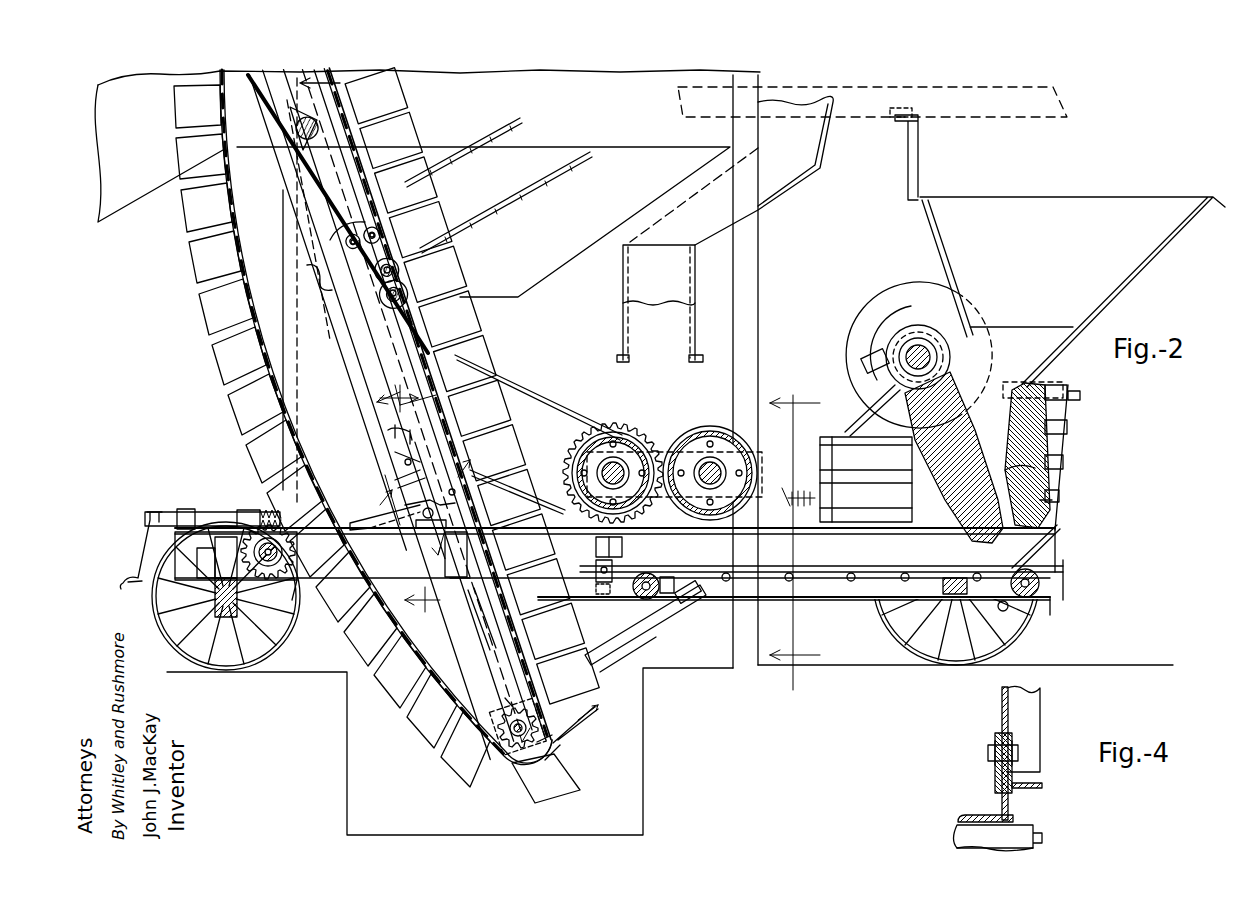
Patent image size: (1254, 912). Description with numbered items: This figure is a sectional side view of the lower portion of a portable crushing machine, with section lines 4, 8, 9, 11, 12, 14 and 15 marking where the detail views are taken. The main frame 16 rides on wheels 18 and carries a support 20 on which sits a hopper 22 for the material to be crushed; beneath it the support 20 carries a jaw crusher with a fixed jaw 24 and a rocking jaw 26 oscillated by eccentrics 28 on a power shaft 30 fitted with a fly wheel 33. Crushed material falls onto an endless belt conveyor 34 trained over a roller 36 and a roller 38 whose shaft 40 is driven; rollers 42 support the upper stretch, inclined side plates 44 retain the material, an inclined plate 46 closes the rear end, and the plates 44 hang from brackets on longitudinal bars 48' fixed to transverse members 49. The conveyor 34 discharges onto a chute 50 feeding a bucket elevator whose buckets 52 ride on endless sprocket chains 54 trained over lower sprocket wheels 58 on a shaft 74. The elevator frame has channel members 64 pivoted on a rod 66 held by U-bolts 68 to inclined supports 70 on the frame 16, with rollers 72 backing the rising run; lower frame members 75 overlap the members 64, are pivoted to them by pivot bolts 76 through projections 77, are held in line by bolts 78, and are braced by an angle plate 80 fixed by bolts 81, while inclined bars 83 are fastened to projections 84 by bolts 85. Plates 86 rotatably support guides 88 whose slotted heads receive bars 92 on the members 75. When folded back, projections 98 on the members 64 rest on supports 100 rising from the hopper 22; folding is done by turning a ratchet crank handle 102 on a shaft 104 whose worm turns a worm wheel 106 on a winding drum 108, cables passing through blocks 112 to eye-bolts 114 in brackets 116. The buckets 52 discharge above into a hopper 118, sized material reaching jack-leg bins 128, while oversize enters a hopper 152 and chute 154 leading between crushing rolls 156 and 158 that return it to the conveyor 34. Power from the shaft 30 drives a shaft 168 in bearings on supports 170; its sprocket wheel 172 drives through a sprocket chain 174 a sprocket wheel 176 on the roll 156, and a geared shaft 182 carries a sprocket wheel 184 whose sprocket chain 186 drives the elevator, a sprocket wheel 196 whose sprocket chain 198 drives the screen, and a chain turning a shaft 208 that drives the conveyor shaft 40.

In FIG. 2, the section line 4— 4 is at (554, 723).
In FIG. 2, the section line 8— 8 is at (800, 542).
In FIG. 2, the section line 9— 9 is at (428, 599).
In FIG. 2, the section line 11— 11 is at (320, 75).
In FIG. 2, the section line 12— 12 is at (408, 395).
In FIG. 2, the section line 14— 14 is at (411, 465).
In FIG. 2, the section line 15— 15 is at (421, 491).
In FIG. 2, the main frame 16 is at (190, 590).
In FIG. 2, the wheels 18 is at (1020, 622).
In FIG. 2, the support 20 is at (1050, 412).
In FIG. 2, the hopper 22 is at (1130, 278).
In FIG. 2, the fixed jaw 24 is at (1045, 493).
In FIG. 2, the rocking jaw 26 is at (1040, 448).
In FIG. 2, the eccentrics 28 is at (893, 300).
In FIG. 2, the shaft 30 is at (920, 330).
In FIG. 2, the fly wheel 33 is at (866, 330).
In FIG. 2, the endless belt conveyor 34 is at (870, 582).
In FIG. 2, the roller 36 is at (1038, 595).
In FIG. 2, the roller 38 is at (640, 600).
In FIG. 2, the shaft 40 is at (640, 585).
In FIG. 2, the rollers 42 is at (851, 582).
In FIG. 2, the inclined side plates 44 is at (1045, 556).
In FIG. 2, the inclined plate 46 is at (1040, 545).
In FIG. 2, the longitudinal bars 48' is at (790, 555).
In FIG. 2, the transverse members 49 is at (1010, 628).
In FIG. 2, the chute 50 is at (630, 654).
In FIG. 2, the buckets 52 is at (418, 728).
In FIG. 2, the endless sprocket chains 54 is at (372, 138).
In FIG. 2, the lower sprocket wheels 58 is at (503, 700).
In FIG. 2, the channel members 64 is at (848, 92).
In FIG. 2, the rod 66 is at (360, 98).
In FIG. 2, the U-bolts 68 is at (290, 130).
In FIG. 2, the inclined supports 70 is at (300, 390).
In FIG. 2, the rollers 72 is at (415, 262).
In FIG. 2, the shaft 74 is at (508, 720).
In FIG. 2, the frame members 75 is at (423, 399).
In FIG. 4, the frame members 75 is at (958, 818).
In FIG. 2, the pivot bolts 76 is at (360, 250).
In FIG. 2, the projections 77 is at (305, 275).
In FIG. 2, the bolts 78 is at (452, 488).
In FIG. 2, the angle plate 80 is at (478, 598).
In FIG. 2, the bolts 81 is at (455, 588).
In FIG. 2, the inclined bars 83 is at (650, 640).
In FIG. 4, the inclined bars 83 is at (1025, 740).
In FIG. 2, the projections 84 is at (555, 752).
In FIG. 4, the projections 84 is at (995, 783).
In FIG. 2, the bolts 85 is at (556, 738).
In FIG. 4, the bolts 85 is at (988, 753).
In FIG. 2, the plates 86 is at (445, 564).
In FIG. 2, the guides 88 is at (592, 547).
In FIG. 2, the bars 92 is at (500, 640).
In FIG. 4, the bars 92 is at (1042, 786).
In FIG. 2, the projections 98 is at (905, 108).
In FIG. 2, the supports 100 is at (898, 121).
In FIG. 2, the ratchet crank handle 102 is at (148, 560).
In FIG. 2, the shaft 104 is at (205, 512).
In FIG. 2, the worm wheel 106 is at (292, 598).
In FIG. 2, the winding drum 108 is at (268, 568).
In FIG. 2, the blocks 112 is at (410, 478).
In FIG. 2, the eye-bolts 114 is at (400, 457).
In FIG. 2, the brackets 116 is at (390, 438).
In FIG. 2, the hopper 118 is at (360, 515).
In FIG. 2, the jack-leg hoppers or bins 128 is at (118, 205).
In FIG. 2, the hopper 152 is at (823, 158).
In FIG. 2, the chute 154 is at (697, 320).
In FIG. 2, the crushing roll 156 is at (572, 448).
In FIG. 2, the crushing roll 158 is at (708, 428).
In FIG. 2, the shaft 168 is at (420, 280).
In FIG. 2, the supports 170 is at (500, 388).
In FIG. 2, the sprocket wheel 172 is at (385, 300).
In FIG. 2, the sprocket chain 174 is at (540, 392).
In FIG. 2, the sprocket wheel 176 is at (585, 428).
In FIG. 2, the shaft 182 is at (395, 232).
In FIG. 2, the sprocket wheel 184 is at (345, 240).
In FIG. 2, the sprocket chain 186 is at (430, 82).
In FIG. 2, the sprocket wheel 196 is at (325, 225).
In FIG. 2, the sprocket chain 198 is at (466, 176).
In FIG. 2, the shaft 208 is at (428, 527).